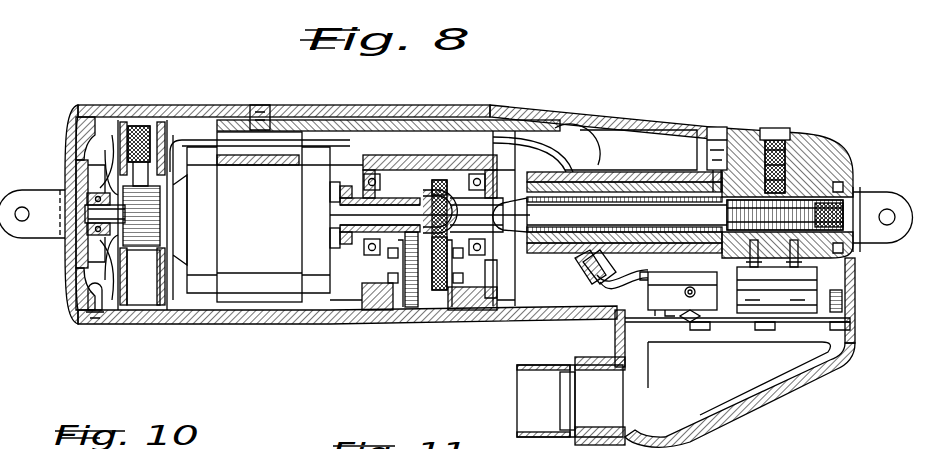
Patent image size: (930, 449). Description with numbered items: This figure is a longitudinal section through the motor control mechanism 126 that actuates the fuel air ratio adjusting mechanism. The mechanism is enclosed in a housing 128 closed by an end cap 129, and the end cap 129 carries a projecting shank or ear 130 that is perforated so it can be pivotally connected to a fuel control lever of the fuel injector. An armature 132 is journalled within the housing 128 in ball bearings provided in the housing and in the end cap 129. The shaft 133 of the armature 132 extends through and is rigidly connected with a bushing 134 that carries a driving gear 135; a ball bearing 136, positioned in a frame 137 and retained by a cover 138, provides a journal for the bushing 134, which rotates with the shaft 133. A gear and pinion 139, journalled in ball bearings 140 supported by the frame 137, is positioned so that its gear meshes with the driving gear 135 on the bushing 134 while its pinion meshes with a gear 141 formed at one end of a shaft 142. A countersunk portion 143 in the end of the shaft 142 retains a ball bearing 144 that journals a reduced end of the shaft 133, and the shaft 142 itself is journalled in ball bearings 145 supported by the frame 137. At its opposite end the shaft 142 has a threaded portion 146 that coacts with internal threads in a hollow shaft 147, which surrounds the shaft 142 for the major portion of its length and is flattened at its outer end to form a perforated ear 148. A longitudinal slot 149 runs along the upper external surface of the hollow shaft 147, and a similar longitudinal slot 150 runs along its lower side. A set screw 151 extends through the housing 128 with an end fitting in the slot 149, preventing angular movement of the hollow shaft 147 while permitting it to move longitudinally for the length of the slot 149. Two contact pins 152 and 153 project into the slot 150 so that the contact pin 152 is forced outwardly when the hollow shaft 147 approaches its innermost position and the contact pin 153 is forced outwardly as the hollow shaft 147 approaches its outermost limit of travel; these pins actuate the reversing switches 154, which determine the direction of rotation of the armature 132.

The motor control mechanism 126 is at (221, 335).
The housing 128 is at (376, 322).
The end cap 129 is at (67, 136).
The projecting shank or ear 130 is at (36, 240).
The armature 132 is at (251, 217).
The shaft 133 is at (338, 216).
The bushing 134 is at (345, 236).
The driving gear 135 is at (430, 201).
The ball bearing 136 is at (378, 172).
The frame 137 is at (453, 132).
The cover 138 is at (350, 171).
The gear and pinion 139 is at (432, 312).
The ball bearings 140 is at (381, 312).
The gear 141 is at (437, 178).
The shaft 142 is at (630, 208).
The countersunk portion 143 is at (548, 148).
The ball bearing 144 is at (516, 136).
The ball bearings 145 is at (490, 268).
The threaded portion 146 is at (740, 194).
The hollow shaft 147 is at (832, 176).
The perforated ear 148 is at (903, 206).
The longitudinal slot 149 is at (797, 186).
The longitudinal slot 150 is at (576, 266).
The set screw 151 is at (770, 162).
The contact pin 152 is at (849, 258).
The contact pin 153 is at (733, 292).
The reversing switches 154 is at (780, 300).